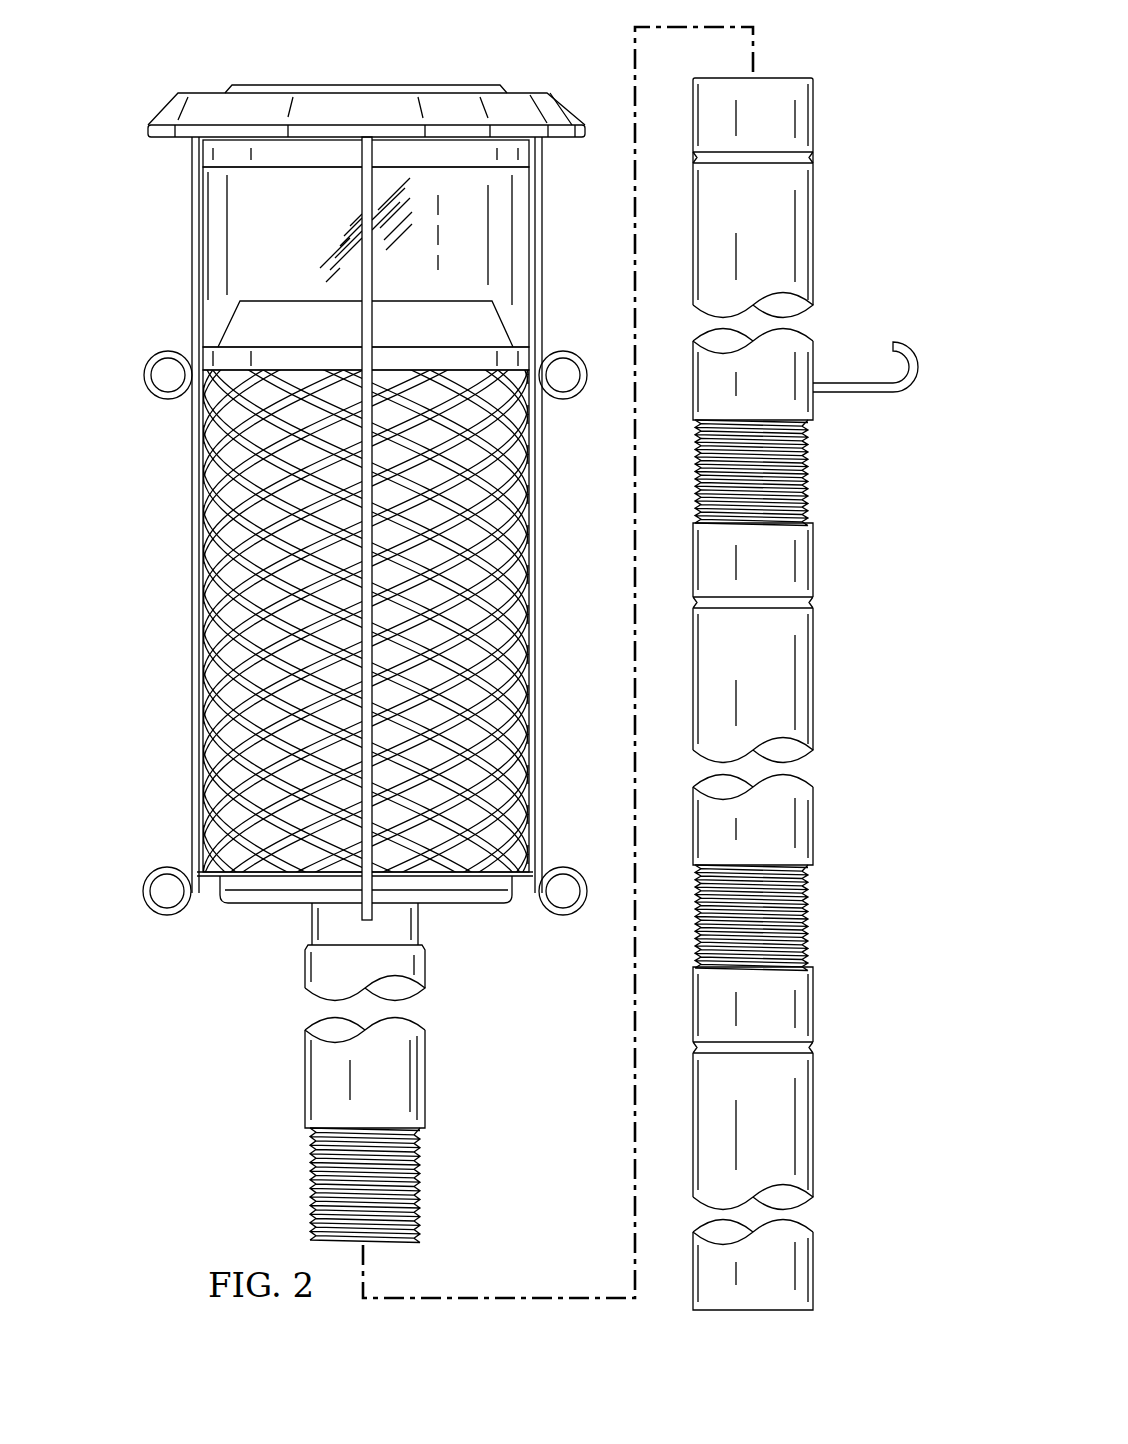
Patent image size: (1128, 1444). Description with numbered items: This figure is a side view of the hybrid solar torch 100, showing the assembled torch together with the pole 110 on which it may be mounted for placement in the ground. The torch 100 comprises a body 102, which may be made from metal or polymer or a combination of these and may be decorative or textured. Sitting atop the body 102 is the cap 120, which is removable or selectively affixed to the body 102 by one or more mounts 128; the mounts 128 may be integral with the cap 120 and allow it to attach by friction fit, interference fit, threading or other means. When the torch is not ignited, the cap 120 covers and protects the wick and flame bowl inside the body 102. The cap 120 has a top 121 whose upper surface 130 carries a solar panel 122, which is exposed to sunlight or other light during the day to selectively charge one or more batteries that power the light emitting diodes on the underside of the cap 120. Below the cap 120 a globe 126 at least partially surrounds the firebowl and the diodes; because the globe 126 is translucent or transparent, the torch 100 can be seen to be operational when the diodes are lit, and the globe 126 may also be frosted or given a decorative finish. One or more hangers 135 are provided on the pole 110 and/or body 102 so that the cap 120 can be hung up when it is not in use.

The torch 100 is at (135, 46).
The body 102 is at (118, 413).
The pole 110 is at (814, 558).
The cap 120 is at (120, 88).
The top 121 is at (572, 107).
The solar panel 122 is at (305, 86).
The globe 126 is at (302, 252).
The mounts 128 is at (166, 351).
The upper surface 130 is at (215, 92).
The hangers 135 is at (857, 396).